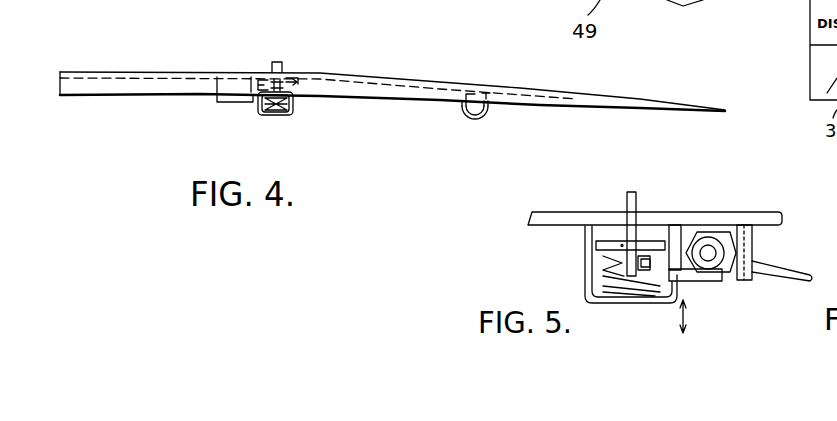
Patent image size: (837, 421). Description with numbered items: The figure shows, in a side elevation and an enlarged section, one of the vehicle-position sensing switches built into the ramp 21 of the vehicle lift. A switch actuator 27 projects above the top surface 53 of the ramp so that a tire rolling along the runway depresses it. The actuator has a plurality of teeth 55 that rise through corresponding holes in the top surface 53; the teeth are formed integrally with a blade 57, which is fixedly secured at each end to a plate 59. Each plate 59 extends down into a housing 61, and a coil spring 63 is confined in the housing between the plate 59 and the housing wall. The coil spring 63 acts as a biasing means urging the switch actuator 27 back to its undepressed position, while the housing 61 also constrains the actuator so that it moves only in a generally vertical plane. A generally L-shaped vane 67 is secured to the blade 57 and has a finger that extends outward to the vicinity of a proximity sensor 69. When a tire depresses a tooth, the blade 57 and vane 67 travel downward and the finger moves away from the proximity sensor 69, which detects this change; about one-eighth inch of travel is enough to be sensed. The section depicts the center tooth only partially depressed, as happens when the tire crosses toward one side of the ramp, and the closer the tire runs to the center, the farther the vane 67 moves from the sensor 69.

In FIG. 4, the ramp 21 is at (498, 88).
In FIG. 4, the switch actuator 27 is at (277, 62).
In FIG. 4, the top surface 53 is at (200, 71).
In FIG. 5, the top surface 53 is at (595, 190).
In FIG. 5, the teeth 55 is at (637, 203).
In FIG. 5, the blade 57 is at (625, 232).
In FIG. 4, the plate 59 is at (297, 81).
In FIG. 5, the plate 59 is at (653, 232).
In FIG. 4, the housing 61 is at (258, 118).
In FIG. 5, the housing 61 is at (585, 273).
In FIG. 4, the coil spring 63 is at (293, 100).
In FIG. 5, the coil spring 63 is at (631, 276).
In FIG. 5, the vane 67 is at (688, 281).
In FIG. 5, the proximity sensor 69 is at (730, 230).